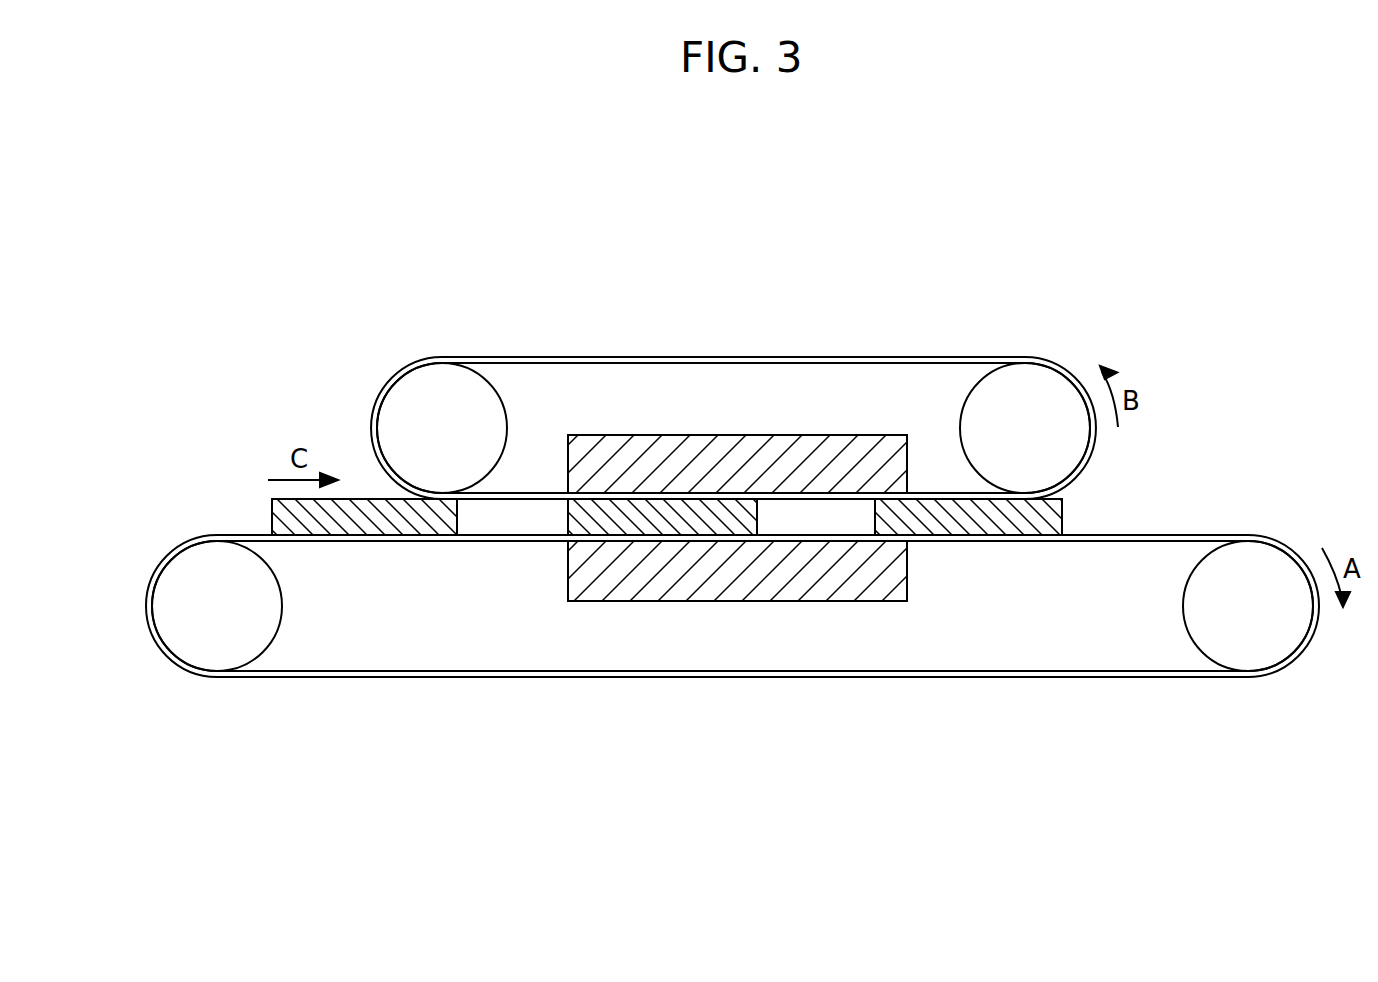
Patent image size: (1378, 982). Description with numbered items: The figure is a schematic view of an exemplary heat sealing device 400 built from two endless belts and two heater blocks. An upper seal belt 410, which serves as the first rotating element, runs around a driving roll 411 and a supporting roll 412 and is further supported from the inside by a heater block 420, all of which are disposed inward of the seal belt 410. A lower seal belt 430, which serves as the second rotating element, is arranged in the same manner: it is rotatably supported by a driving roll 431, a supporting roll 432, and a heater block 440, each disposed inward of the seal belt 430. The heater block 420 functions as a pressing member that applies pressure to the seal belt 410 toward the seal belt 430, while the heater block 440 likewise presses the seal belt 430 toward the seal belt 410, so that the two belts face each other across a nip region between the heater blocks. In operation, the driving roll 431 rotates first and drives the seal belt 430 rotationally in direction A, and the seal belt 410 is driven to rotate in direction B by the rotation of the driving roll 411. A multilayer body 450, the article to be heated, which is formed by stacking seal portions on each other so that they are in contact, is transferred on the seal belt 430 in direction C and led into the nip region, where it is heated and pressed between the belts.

The heat sealing device 400 is at (741, 198).
The seal belt 410 is at (947, 356).
The driving roll 411 is at (1053, 383).
The supporting roll 412 is at (405, 392).
The heater block 420 is at (755, 445).
The seal belt 430 is at (1035, 680).
The driving roll 431 is at (1270, 562).
The supporting roll 432 is at (170, 590).
The heater block 440 is at (790, 601).
The multilayer body 450 is at (272, 510).